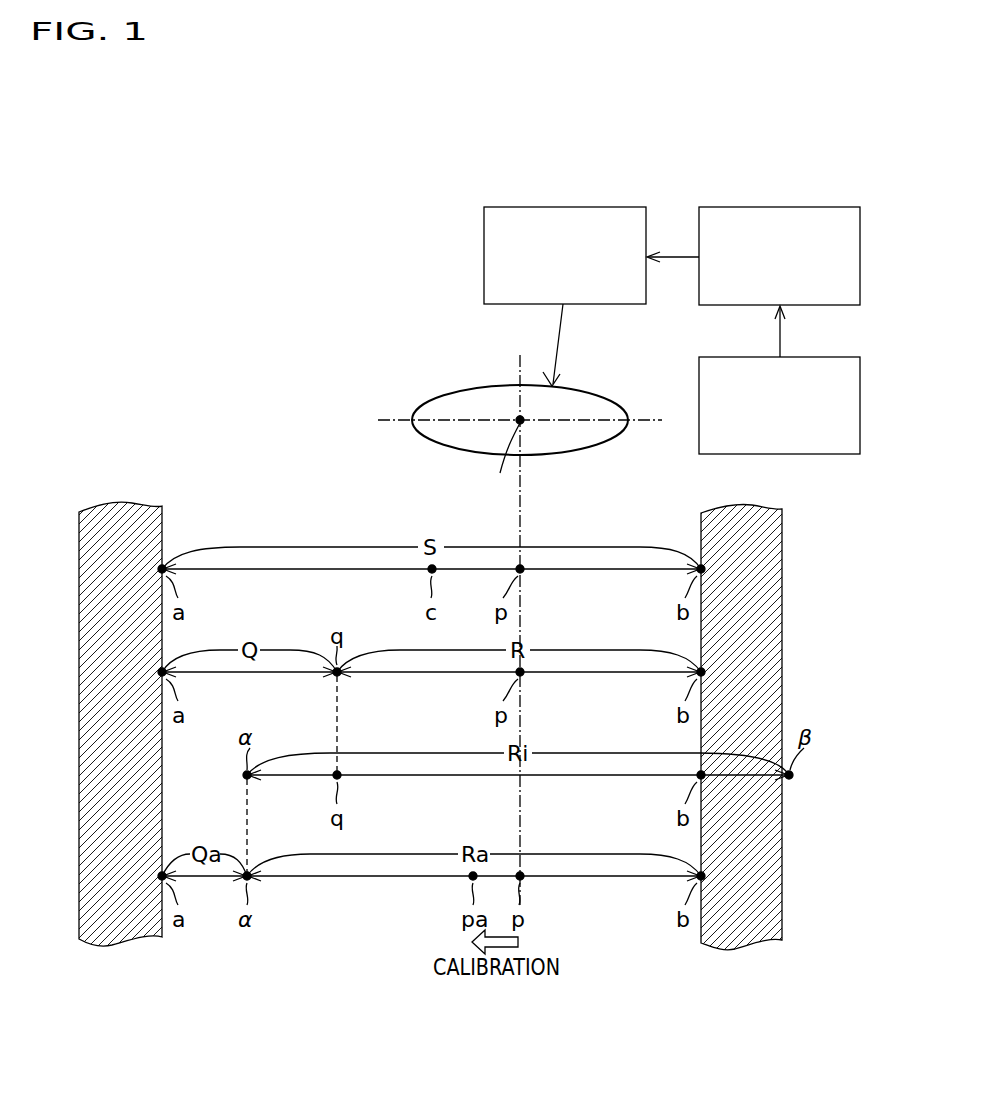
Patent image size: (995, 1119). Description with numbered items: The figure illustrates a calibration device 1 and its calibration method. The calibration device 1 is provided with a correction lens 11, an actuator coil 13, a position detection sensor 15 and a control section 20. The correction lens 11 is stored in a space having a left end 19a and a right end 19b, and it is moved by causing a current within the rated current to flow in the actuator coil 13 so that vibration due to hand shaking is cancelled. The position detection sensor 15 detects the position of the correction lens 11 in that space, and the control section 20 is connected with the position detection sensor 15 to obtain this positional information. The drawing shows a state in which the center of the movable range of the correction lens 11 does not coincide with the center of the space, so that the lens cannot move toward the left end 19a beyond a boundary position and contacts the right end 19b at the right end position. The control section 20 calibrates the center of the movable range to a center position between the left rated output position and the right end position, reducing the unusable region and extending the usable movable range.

The calibration device 1 is at (795, 149).
The correction lens 11 is at (452, 393).
The actuator coil 13 is at (612, 207).
The position detection sensor 15 is at (825, 357).
The left end 19a is at (162, 545).
The right end 19b is at (700, 549).
The control section 20 is at (825, 207).